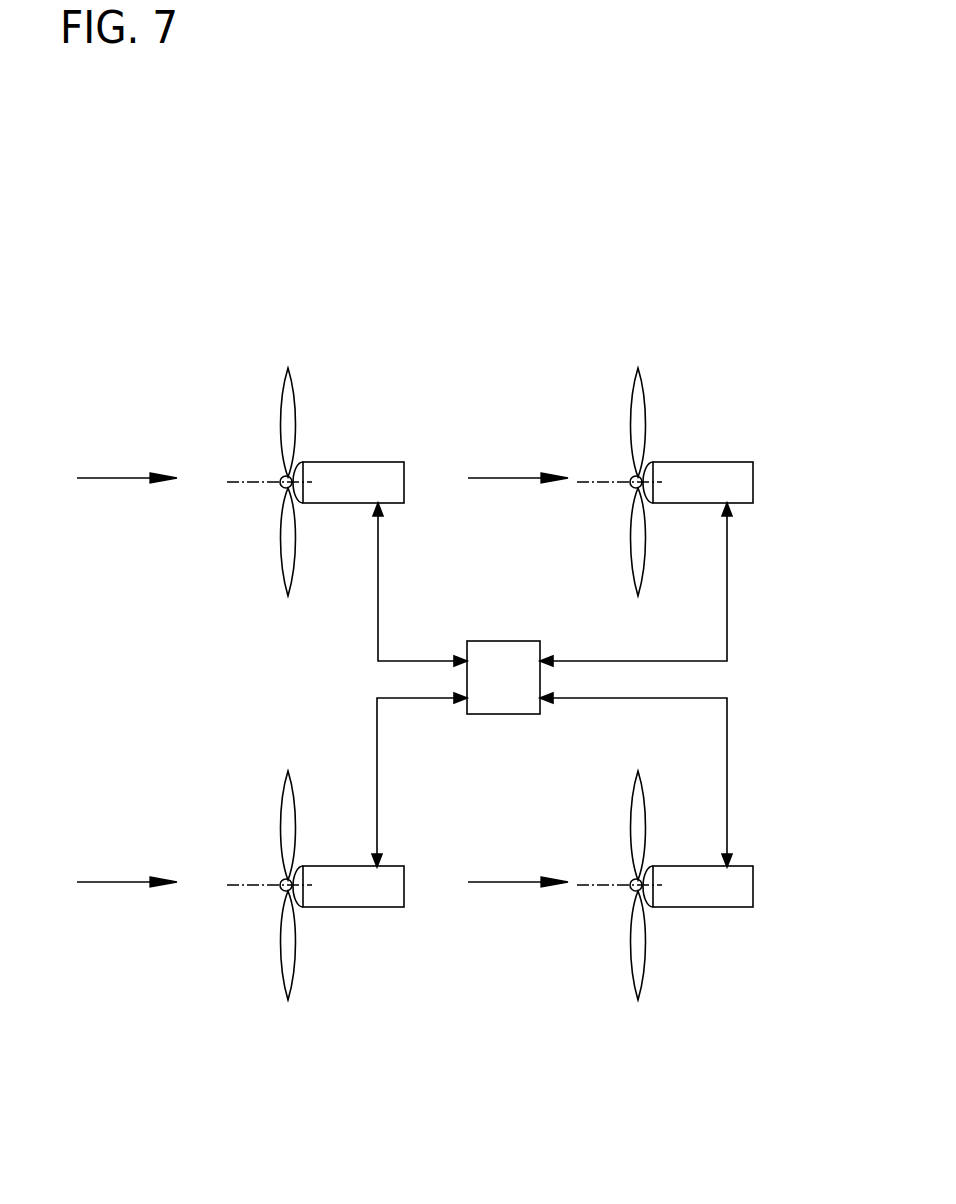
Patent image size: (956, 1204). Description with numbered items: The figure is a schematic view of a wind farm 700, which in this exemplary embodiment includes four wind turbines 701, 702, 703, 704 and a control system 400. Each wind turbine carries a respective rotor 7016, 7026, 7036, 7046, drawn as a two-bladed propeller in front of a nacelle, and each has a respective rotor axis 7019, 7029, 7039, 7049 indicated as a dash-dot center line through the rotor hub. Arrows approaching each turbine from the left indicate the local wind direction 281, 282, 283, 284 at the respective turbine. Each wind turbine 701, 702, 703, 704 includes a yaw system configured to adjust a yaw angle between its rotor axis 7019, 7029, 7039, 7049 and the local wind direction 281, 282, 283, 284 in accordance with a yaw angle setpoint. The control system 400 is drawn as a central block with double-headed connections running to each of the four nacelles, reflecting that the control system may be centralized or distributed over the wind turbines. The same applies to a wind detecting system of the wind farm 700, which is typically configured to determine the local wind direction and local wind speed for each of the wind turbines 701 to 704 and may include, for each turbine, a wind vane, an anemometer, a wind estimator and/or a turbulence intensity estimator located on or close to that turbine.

The wind farm 700 is at (207, 202).
The wind turbine 701 is at (365, 375).
The wind turbine 702 is at (728, 375).
The wind turbine 703 is at (352, 938).
The wind turbine 704 is at (715, 937).
The rotor 7016 is at (273, 403).
The rotor axis 7019 is at (250, 452).
The rotor 7026 is at (619, 403).
The rotor axis 7029 is at (577, 480).
The rotor 7036 is at (272, 822).
The rotor axis 7039 is at (228, 883).
The rotor 7046 is at (619, 822).
The rotor axis 7049 is at (577, 883).
The local wind direction 281 is at (116, 477).
The local wind direction 282 is at (507, 477).
The local wind direction 283 is at (116, 881).
The local wind direction 284 is at (507, 881).
The control system 400 is at (483, 689).